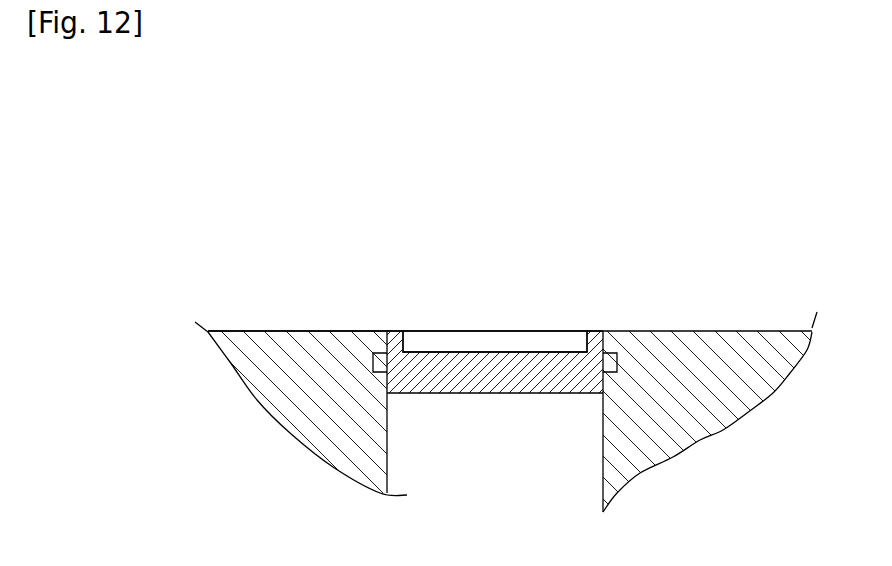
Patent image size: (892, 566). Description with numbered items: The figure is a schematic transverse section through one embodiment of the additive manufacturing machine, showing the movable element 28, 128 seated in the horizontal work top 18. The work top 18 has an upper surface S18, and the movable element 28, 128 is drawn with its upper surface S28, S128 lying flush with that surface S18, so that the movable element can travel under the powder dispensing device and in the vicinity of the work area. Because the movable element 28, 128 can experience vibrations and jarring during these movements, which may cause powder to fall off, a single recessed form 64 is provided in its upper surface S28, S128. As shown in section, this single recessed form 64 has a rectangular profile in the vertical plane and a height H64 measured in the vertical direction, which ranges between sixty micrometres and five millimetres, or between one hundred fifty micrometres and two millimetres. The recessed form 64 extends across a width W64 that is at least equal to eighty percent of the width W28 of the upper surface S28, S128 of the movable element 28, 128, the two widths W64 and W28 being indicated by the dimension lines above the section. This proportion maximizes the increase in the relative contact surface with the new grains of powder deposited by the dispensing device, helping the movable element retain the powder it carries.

The work top 18 is at (768, 331).
The upper surface of the work top S18 is at (308, 331).
The movable element 28 is at (495, 416).
The movable element 128 is at (493, 387).
The upper surface of the movable element S28 is at (552, 276).
The upper surface of the movable element S128 is at (598, 331).
The single recessed form 64 is at (510, 342).
The height of the recessed form H64 is at (420, 378).
The width of the upper surface of the movable element W28 is at (603, 331).
The width of the recessed form W64 is at (587, 331).